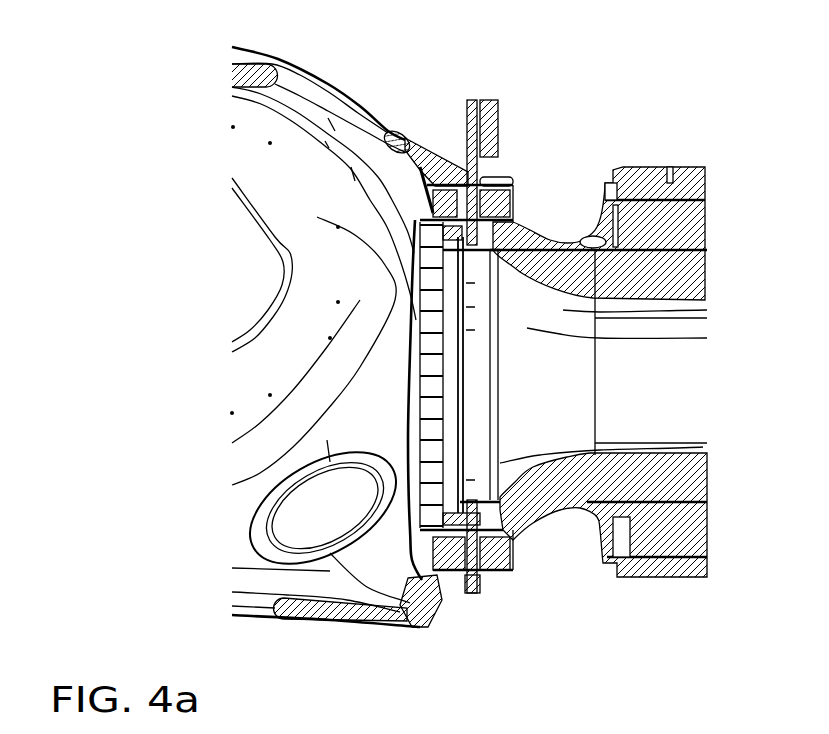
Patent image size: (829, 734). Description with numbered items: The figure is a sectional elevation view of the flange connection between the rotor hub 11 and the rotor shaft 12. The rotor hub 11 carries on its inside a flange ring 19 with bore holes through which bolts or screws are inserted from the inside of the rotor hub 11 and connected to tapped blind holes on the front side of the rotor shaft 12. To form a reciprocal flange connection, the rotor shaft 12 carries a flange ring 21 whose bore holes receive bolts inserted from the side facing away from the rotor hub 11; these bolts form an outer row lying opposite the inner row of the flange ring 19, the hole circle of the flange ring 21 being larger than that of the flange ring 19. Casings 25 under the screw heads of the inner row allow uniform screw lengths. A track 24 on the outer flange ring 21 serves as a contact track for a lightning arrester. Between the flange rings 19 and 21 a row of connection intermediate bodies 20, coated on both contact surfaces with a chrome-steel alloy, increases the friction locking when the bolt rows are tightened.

The rotor hub 11 is at (412, 140).
The rotor shaft 12 is at (560, 250).
The flange ring 19 is at (425, 160).
The connection intermediate bodies 20 is at (472, 100).
The flange ring 21 is at (517, 200).
The track 24 is at (492, 181).
The casings 25 is at (413, 387).